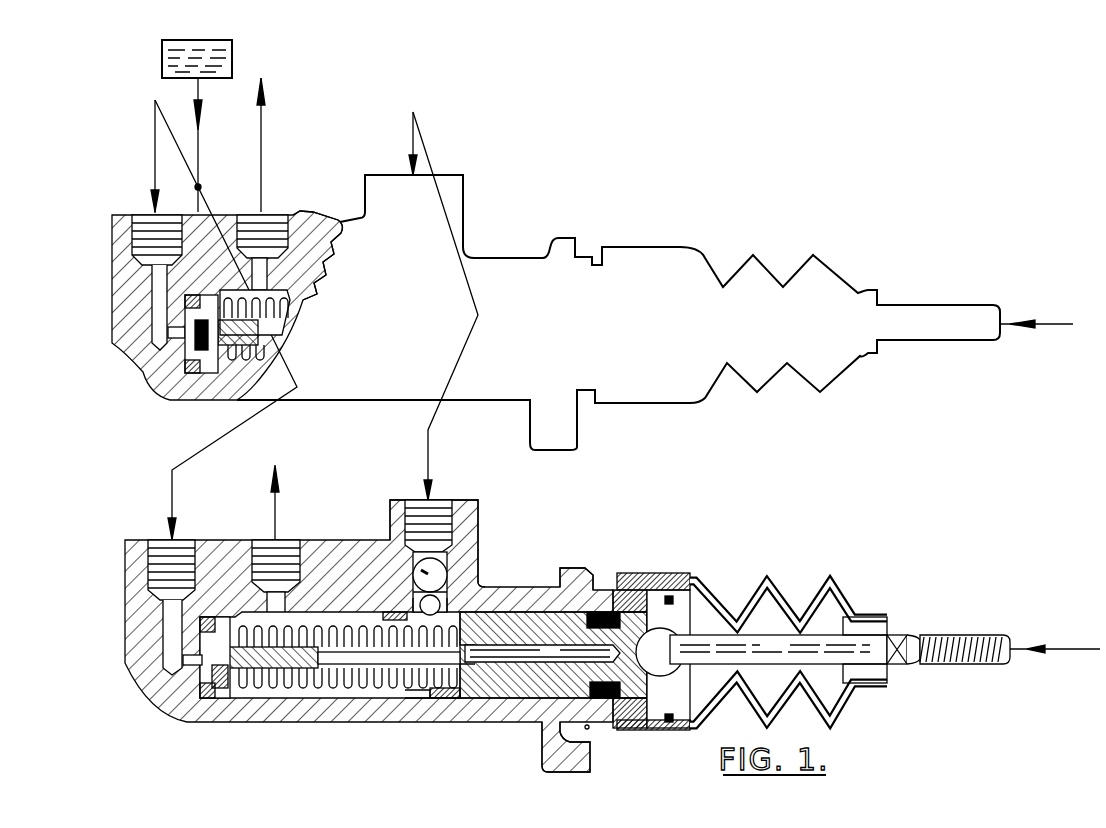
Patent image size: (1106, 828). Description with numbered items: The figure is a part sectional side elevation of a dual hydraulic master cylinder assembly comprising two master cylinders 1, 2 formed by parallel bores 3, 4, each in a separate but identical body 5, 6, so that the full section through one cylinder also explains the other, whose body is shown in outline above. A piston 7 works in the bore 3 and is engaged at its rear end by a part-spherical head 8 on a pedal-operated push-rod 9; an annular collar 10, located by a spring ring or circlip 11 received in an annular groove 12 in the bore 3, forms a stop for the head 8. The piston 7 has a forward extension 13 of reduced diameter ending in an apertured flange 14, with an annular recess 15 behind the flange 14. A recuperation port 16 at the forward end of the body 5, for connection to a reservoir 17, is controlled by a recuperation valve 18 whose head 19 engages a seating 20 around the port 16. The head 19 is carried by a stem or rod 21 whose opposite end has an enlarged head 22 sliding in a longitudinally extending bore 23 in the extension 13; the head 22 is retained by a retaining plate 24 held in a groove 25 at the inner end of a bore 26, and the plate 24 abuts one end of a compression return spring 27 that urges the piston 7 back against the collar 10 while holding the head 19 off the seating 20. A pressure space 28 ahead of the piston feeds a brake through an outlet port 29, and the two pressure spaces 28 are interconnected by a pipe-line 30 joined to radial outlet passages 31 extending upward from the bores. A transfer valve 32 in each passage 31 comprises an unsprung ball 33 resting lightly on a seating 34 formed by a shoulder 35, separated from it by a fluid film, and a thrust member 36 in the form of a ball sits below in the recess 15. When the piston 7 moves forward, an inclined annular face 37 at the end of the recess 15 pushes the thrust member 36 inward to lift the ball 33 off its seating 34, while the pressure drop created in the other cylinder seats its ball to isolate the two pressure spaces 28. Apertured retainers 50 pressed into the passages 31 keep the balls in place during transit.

The master cylinder 1 is at (588, 573).
The master cylinder 2 is at (615, 267).
The bore 3 is at (335, 565).
The bore 4 is at (287, 287).
The body 5 is at (542, 607).
The body 6 is at (510, 290).
The piston 7 is at (627, 705).
The part-spherical head 8 is at (658, 640).
The pedal-operated push-rod 9 is at (918, 633).
The annular collar 10 is at (672, 700).
The spring ring or circlip 11 is at (660, 727).
The annular groove 12 is at (662, 608).
The forward extension 13 is at (595, 723).
The apertured flange 14 is at (405, 697).
The annular recess 15 is at (440, 695).
The recuperation port 16 is at (200, 660).
The reservoir 17 is at (232, 57).
The recuperation valve 18 is at (215, 697).
The head 19 is at (225, 698).
The seating 20 is at (193, 660).
The stem or rod 21 is at (295, 657).
The enlarged head 22 is at (486, 628).
The longitudinally extending bore 23 is at (557, 653).
The retaining plate 24 is at (485, 681).
The groove 25 is at (457, 610).
The bore 26 is at (427, 695).
The compression return spring 27 is at (340, 683).
The pressure space 28 is at (262, 695).
The outlet port 29 is at (267, 537).
The pipe-line 30 is at (472, 283).
The radial outlet passage 31 is at (453, 528).
The transfer valve 32 is at (395, 565).
The ball 33 is at (412, 560).
The seating 34 is at (452, 560).
The shoulder 35 is at (447, 585).
The thrust member 36 is at (330, 597).
The inclined annular face 37 is at (470, 700).
The apertured retainer 50 is at (434, 556).